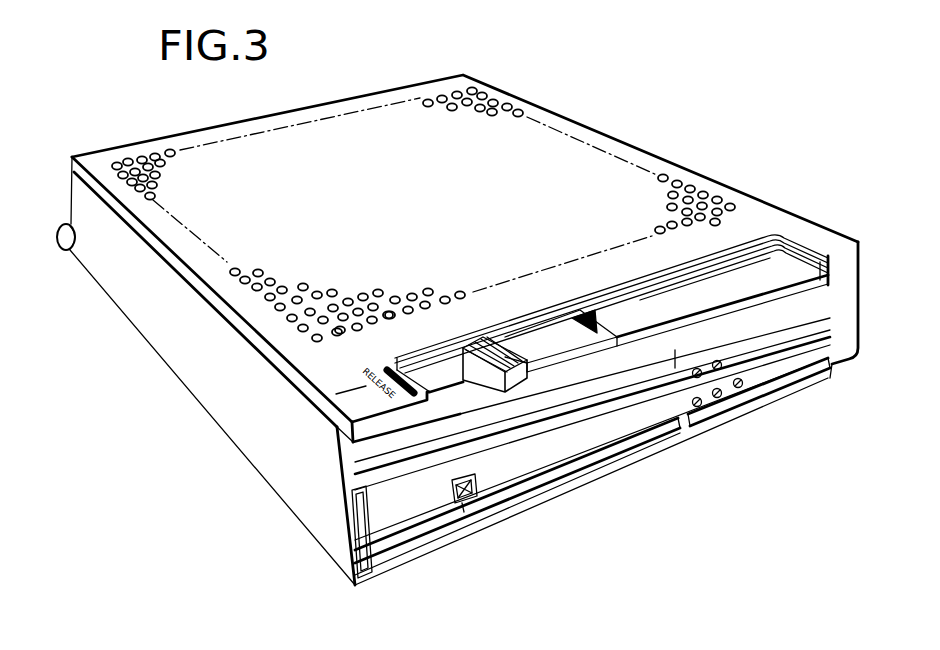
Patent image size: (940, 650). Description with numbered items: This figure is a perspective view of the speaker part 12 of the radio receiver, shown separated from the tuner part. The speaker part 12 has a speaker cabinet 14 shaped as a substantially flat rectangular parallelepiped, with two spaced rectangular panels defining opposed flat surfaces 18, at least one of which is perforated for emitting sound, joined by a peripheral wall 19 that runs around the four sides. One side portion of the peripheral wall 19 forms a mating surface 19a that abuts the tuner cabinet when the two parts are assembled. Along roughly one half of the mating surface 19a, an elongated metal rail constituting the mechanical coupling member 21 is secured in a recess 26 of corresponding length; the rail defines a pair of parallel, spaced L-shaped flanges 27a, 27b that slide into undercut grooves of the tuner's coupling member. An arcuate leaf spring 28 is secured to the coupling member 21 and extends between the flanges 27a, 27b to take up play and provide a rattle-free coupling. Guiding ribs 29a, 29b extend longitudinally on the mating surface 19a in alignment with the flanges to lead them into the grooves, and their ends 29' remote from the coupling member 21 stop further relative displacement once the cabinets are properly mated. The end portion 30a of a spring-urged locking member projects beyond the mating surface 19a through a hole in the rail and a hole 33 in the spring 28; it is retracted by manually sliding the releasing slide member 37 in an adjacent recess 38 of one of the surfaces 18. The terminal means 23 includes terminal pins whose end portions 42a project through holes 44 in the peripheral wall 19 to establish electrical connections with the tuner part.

The speaker part 12 is at (684, 126).
The speaker cabinet 14 is at (600, 132).
The substantially flat surfaces 18 is at (513, 158).
The peripheral wall 19 is at (197, 353).
The mating surface 19a is at (921, 421).
The mechanical coupling member 21 is at (620, 428).
The terminal means 23 is at (700, 408).
The recess 26 is at (348, 495).
The flange 27a is at (579, 469).
The flange 27b is at (488, 522).
The arcuate leaf spring 28 is at (418, 523).
The ends of guiding ribs 29' is at (648, 304).
The guiding rib 29a is at (912, 306).
The guiding rib 29b is at (830, 406).
The end portion of locking member 30a is at (464, 510).
The hole 33 is at (477, 488).
The releasing slide member 37 is at (522, 345).
The recess 38 is at (458, 380).
The end portions of terminal pins 42a is at (716, 360).
The holes 44 is at (742, 380).